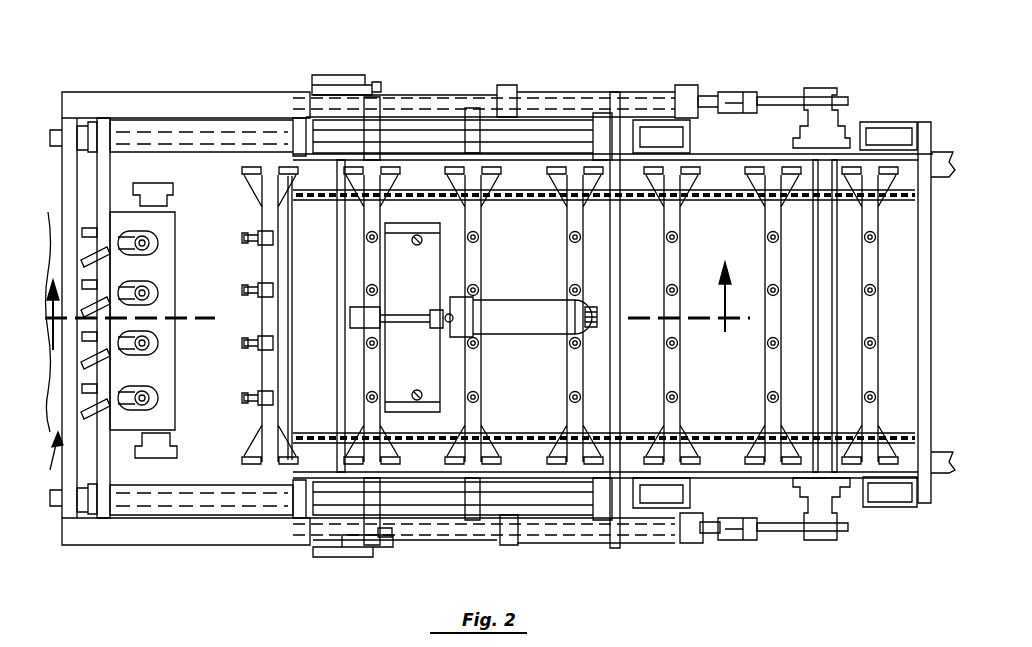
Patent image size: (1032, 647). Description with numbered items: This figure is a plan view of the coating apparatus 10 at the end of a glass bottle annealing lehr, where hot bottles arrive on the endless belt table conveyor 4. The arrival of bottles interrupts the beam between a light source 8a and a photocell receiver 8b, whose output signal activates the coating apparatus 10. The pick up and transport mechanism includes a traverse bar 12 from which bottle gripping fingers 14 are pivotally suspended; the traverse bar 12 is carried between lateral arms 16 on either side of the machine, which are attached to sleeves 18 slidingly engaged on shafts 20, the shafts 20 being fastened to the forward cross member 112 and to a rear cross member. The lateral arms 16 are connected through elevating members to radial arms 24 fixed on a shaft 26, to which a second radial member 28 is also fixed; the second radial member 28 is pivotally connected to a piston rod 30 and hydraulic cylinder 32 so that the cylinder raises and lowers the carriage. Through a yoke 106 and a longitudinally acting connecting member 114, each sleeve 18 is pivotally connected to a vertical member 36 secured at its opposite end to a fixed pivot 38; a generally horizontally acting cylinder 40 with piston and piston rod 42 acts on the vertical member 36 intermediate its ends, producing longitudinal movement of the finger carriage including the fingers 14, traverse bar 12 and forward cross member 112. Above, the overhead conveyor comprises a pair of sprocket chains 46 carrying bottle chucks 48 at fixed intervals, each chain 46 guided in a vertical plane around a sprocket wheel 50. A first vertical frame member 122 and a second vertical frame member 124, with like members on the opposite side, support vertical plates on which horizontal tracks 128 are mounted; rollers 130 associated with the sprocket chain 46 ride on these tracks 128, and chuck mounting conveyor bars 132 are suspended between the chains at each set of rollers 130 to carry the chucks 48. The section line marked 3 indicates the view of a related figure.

The section line 3- 3 is at (397, 314).
The endless belt table conveyor 4 is at (50, 353).
The light source 8a is at (160, 450).
The photocell receiver 8b is at (152, 193).
The coating apparatus 10 is at (588, 72).
The traverse bar 12 is at (105, 173).
The bottle gripping fingers 14 is at (160, 250).
The lateral arms 16 is at (208, 91).
The sleeves 18 is at (243, 130).
The shafts 20 is at (443, 133).
The radial arms 24 is at (388, 90).
The shaft 26 is at (367, 127).
The second radial member 28 is at (382, 310).
The piston rod 30 is at (415, 320).
The hydraulic cylinder 32 is at (507, 310).
The vertical members 36 is at (785, 95).
The fixed pivots 38 is at (835, 127).
The cylinder 40 is at (662, 90).
The piston and piston rod 42 is at (705, 102).
The sprocket chains 46 is at (638, 199).
The bottle chucks 48 is at (258, 287).
The sprocket wheel 50 is at (320, 207).
The yoke 106 is at (303, 507).
The forward cross member 112 is at (70, 197).
The longitudinally acting connecting member 114 is at (545, 95).
The first vertical frame member 122 is at (638, 133).
The second vertical frame member 124 is at (893, 127).
The horizontal tracks 128 is at (943, 163).
The rollers 130 is at (555, 177).
The chuck mounting conveyor bars 132 is at (283, 262).